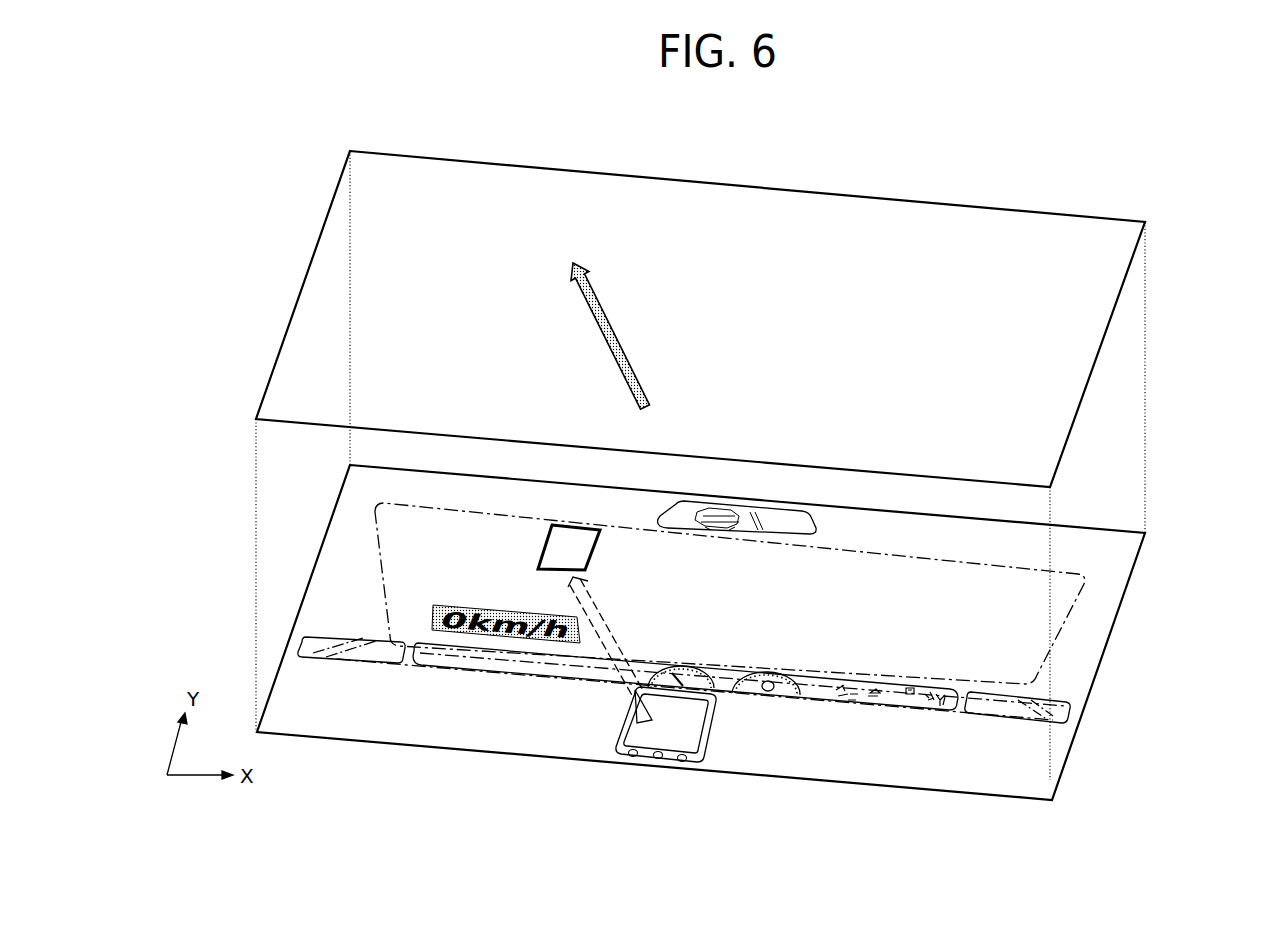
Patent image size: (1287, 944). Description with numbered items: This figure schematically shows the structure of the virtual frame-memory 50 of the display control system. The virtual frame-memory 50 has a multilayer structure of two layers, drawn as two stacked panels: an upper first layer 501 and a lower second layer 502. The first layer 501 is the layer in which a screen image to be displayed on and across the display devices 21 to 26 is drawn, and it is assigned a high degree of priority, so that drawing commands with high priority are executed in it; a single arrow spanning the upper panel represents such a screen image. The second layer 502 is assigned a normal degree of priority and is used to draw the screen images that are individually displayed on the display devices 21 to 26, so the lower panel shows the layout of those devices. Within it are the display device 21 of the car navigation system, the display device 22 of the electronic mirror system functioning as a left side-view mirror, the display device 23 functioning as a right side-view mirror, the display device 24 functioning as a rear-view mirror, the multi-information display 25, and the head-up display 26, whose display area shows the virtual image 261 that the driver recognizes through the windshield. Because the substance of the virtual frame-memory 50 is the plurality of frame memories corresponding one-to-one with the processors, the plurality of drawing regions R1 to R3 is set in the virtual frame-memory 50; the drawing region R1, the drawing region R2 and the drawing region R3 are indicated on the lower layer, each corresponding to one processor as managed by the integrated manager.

The virtual frame-memory 50 is at (1228, 362).
The first layer 501 is at (1100, 348).
The second layer 502 is at (1117, 528).
The display device 26 is at (1065, 577).
The virtual image 261 is at (592, 560).
The display device 24 is at (805, 523).
The display device 25 is at (812, 692).
The display device 21 is at (638, 732).
The display device 22 is at (307, 650).
The display device 23 is at (997, 713).
The drawing region R1 is at (713, 720).
The drawing region R2 is at (1077, 597).
The drawing region R3 is at (660, 516).